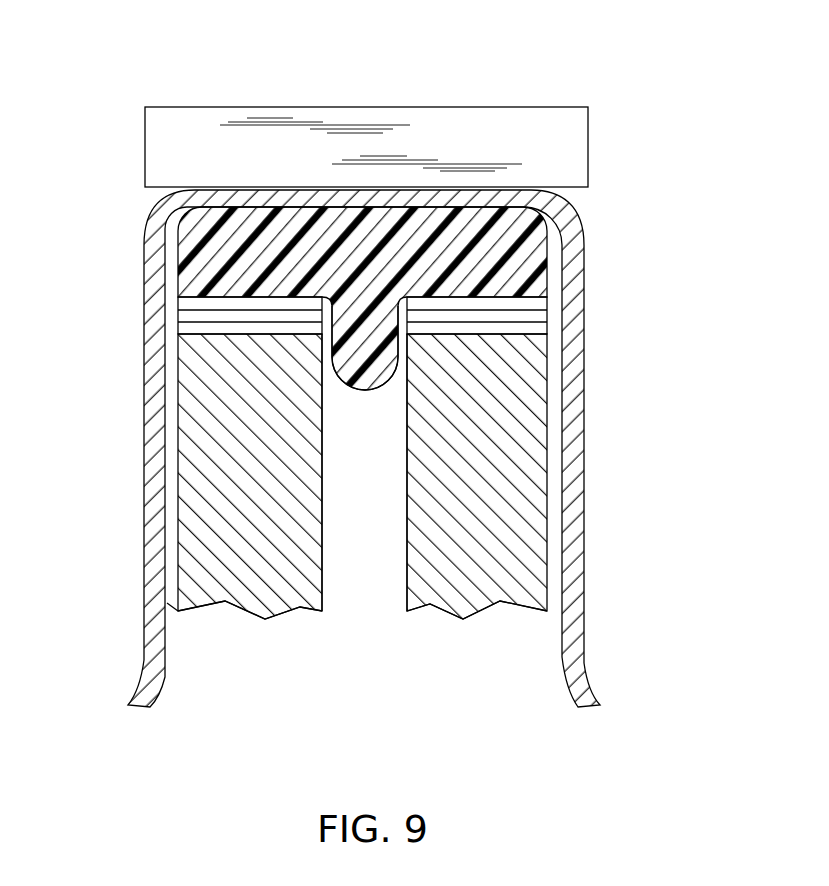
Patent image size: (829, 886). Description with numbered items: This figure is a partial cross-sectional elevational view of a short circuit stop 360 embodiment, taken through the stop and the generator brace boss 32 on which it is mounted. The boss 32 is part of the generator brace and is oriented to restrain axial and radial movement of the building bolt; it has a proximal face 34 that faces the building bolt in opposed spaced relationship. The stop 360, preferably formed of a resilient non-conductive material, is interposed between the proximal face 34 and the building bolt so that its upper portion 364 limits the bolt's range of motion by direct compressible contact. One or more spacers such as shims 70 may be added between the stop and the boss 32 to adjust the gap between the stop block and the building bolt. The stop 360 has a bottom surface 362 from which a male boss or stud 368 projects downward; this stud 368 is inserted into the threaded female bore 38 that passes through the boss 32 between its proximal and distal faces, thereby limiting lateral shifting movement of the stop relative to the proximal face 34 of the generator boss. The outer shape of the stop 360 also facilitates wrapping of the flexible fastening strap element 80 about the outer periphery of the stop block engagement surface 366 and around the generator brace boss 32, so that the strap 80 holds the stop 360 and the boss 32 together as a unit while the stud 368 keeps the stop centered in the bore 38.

The boss 32 is at (523, 620).
The proximal face 34 is at (257, 335).
The threaded female bore 38 is at (323, 475).
The shim 70 is at (197, 315).
The flexible fastening strap element 80 is at (155, 440).
The short circuit stop 360 is at (395, 203).
The bottom surface 362 is at (470, 296).
The cap plate 364 is at (340, 107).
The stop block engagement surface 366 is at (228, 164).
The male boss or stud 368 is at (380, 343).